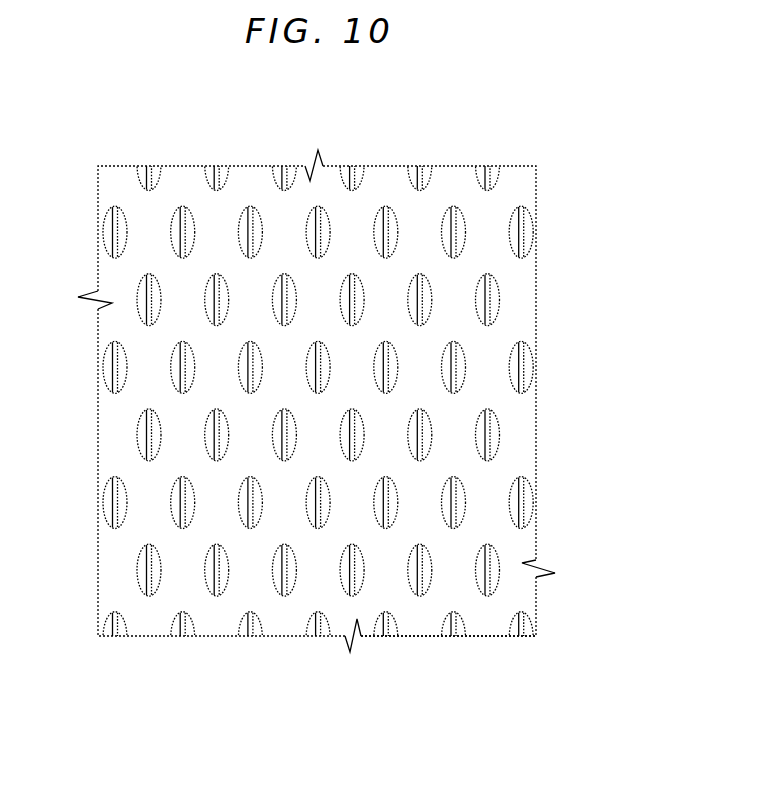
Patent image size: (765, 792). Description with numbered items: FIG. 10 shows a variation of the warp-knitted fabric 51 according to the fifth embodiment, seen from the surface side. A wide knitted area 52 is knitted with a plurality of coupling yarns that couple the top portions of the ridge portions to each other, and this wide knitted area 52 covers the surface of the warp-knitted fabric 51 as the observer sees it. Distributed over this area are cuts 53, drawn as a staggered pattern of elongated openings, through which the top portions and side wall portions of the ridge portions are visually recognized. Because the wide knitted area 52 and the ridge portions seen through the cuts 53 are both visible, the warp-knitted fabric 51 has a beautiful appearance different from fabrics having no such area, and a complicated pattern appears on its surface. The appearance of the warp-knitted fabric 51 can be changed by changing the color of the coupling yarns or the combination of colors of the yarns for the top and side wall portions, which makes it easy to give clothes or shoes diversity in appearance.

The warp-knitted fabric 51 is at (98, 145).
The wide knitted area 52 is at (448, 659).
The cut 53 is at (103, 362).